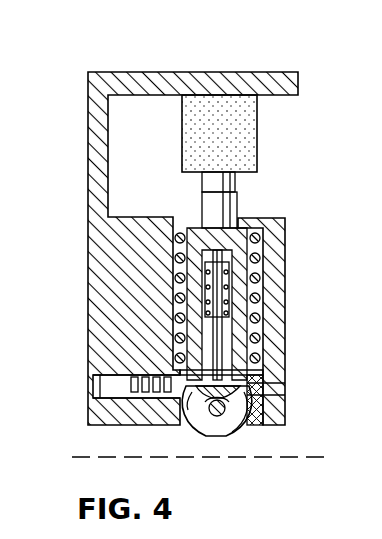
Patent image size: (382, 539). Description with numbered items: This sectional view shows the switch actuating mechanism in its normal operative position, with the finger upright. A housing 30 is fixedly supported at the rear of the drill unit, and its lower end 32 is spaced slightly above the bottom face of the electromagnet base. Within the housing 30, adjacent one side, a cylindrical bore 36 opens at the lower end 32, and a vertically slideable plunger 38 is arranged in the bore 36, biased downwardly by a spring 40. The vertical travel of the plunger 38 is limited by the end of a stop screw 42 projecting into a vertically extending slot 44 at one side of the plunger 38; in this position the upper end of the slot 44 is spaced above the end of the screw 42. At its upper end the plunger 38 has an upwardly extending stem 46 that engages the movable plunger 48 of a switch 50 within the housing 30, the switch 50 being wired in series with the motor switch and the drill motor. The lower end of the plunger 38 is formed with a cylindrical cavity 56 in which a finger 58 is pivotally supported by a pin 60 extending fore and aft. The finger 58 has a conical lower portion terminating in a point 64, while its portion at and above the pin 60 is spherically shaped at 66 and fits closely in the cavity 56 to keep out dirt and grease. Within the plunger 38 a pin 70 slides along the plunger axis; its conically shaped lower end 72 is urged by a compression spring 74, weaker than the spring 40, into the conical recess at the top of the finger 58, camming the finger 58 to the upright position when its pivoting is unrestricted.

The housing 30 is at (297, 70).
The lower end of housing 32 is at (104, 391).
The cylindrical bore 36 is at (263, 302).
The plunger 38 is at (285, 365).
The spring 40 is at (255, 237).
The stop screw 42 is at (122, 392).
The slot 44 is at (160, 400).
The stem 46 is at (238, 203).
The movable plunger of switch 48 is at (236, 184).
The switch 50 is at (182, 160).
The cylindrical cavity 56 is at (268, 378).
The finger 58 is at (241, 425).
The pin 60 is at (213, 414).
The point 64 is at (196, 420).
The spherical portion 66 is at (266, 398).
The pin 70 is at (228, 350).
The conically shaped lower end 72 is at (207, 372).
The compression spring 74 is at (262, 266).